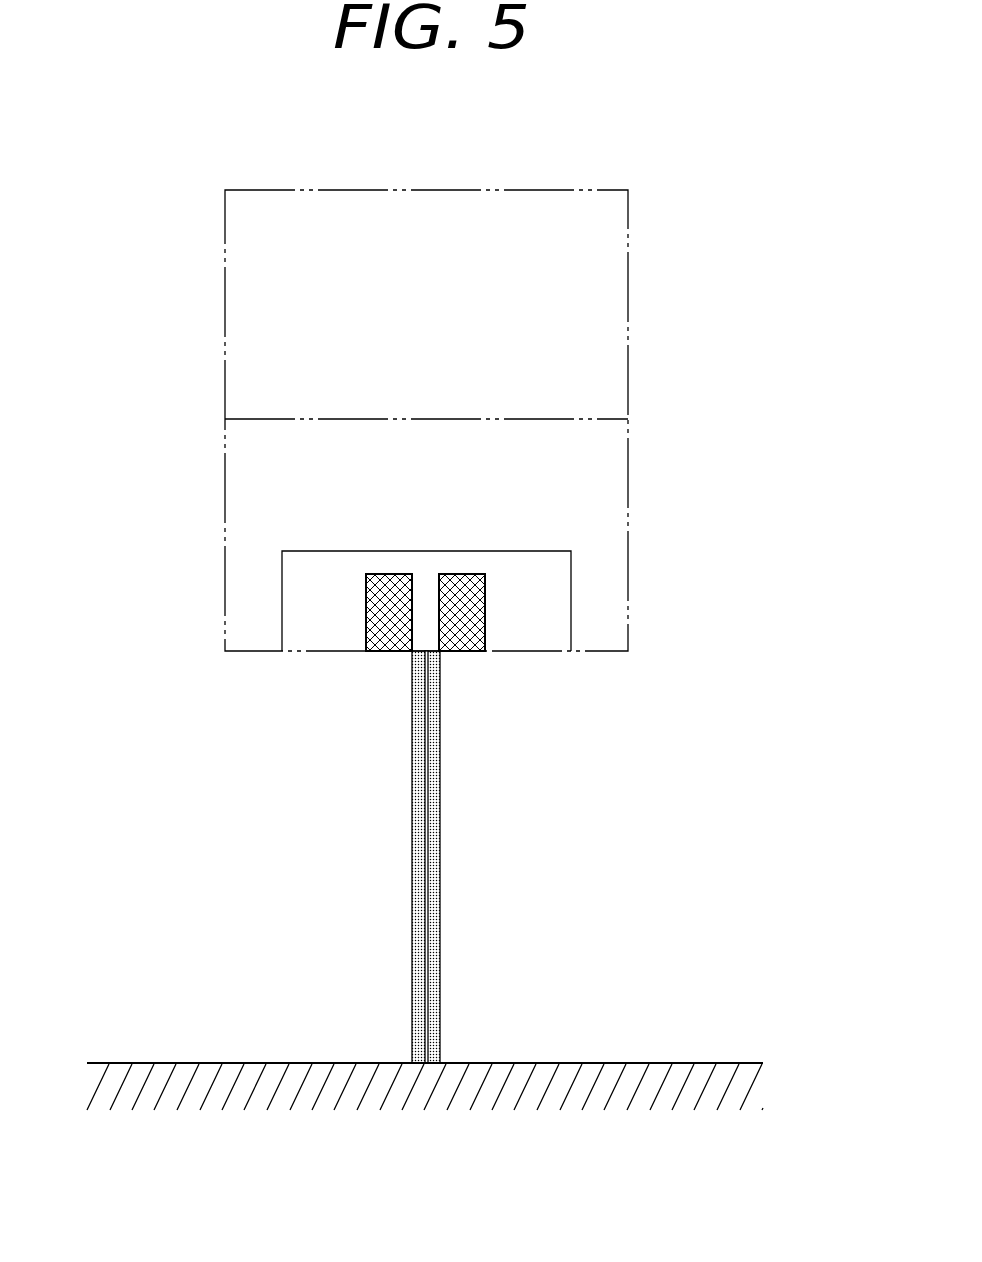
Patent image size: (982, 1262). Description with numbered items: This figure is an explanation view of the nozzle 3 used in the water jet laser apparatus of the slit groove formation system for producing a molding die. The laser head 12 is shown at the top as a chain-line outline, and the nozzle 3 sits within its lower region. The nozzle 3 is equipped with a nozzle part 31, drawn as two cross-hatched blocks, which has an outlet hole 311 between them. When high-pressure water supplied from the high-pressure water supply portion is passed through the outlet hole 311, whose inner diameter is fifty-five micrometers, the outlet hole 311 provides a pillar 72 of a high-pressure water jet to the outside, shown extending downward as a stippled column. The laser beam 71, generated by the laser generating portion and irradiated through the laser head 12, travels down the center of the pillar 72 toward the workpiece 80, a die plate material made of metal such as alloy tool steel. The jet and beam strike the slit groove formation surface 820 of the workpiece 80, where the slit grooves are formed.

The laser head 12 is at (628, 247).
The nozzle 3 is at (503, 551).
The nozzle part 31 is at (473, 612).
The outlet hole 311 is at (411, 614).
The pillar of high-pressure water jet 72 is at (412, 782).
The laser beam 71 is at (430, 833).
The workpiece 80 is at (657, 1046).
The slit groove formation surface 820 is at (250, 1063).